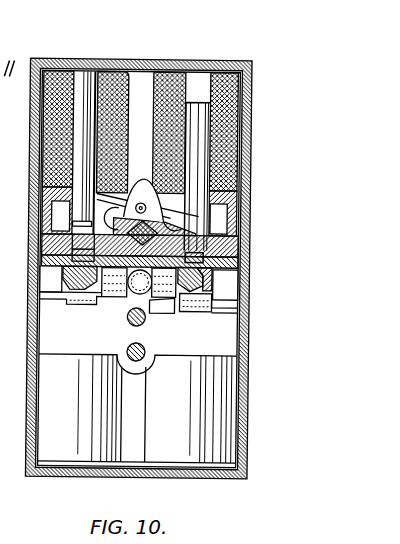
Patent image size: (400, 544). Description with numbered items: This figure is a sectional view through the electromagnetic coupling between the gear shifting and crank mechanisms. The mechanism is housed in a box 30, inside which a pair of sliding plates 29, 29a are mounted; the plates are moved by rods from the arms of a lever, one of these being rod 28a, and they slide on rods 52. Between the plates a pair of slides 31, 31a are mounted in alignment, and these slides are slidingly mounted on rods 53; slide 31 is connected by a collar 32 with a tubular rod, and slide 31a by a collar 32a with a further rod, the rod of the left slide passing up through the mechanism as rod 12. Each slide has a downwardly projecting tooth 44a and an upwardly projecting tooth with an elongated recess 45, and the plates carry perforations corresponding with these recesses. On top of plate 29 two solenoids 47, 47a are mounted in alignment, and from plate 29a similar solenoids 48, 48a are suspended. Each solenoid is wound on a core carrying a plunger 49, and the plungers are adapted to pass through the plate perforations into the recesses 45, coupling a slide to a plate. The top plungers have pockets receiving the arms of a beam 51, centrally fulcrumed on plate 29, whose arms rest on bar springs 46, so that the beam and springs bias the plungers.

The rod 12 is at (80, 322).
The rod 28a is at (147, 352).
The sliding plate 29 is at (237, 210).
The sliding plate 29a is at (232, 335).
The box 30 is at (250, 150).
The slide 31 is at (62, 272).
The slide 31a is at (225, 276).
The collar 32 is at (160, 313).
The collar 32a is at (135, 292).
The downwardly projecting tooth 44a is at (260, 313).
The elongated recess 45 is at (42, 246).
The bar spring 46 is at (123, 216).
The solenoid 47 is at (114, 72).
The solenoid 47a is at (222, 82).
The solenoid 48 is at (70, 458).
The solenoid 48a is at (187, 458).
The plunger 49 is at (78, 80).
The beam 51 is at (134, 181).
The rod 52 is at (249, 243).
The rod 53 is at (238, 260).